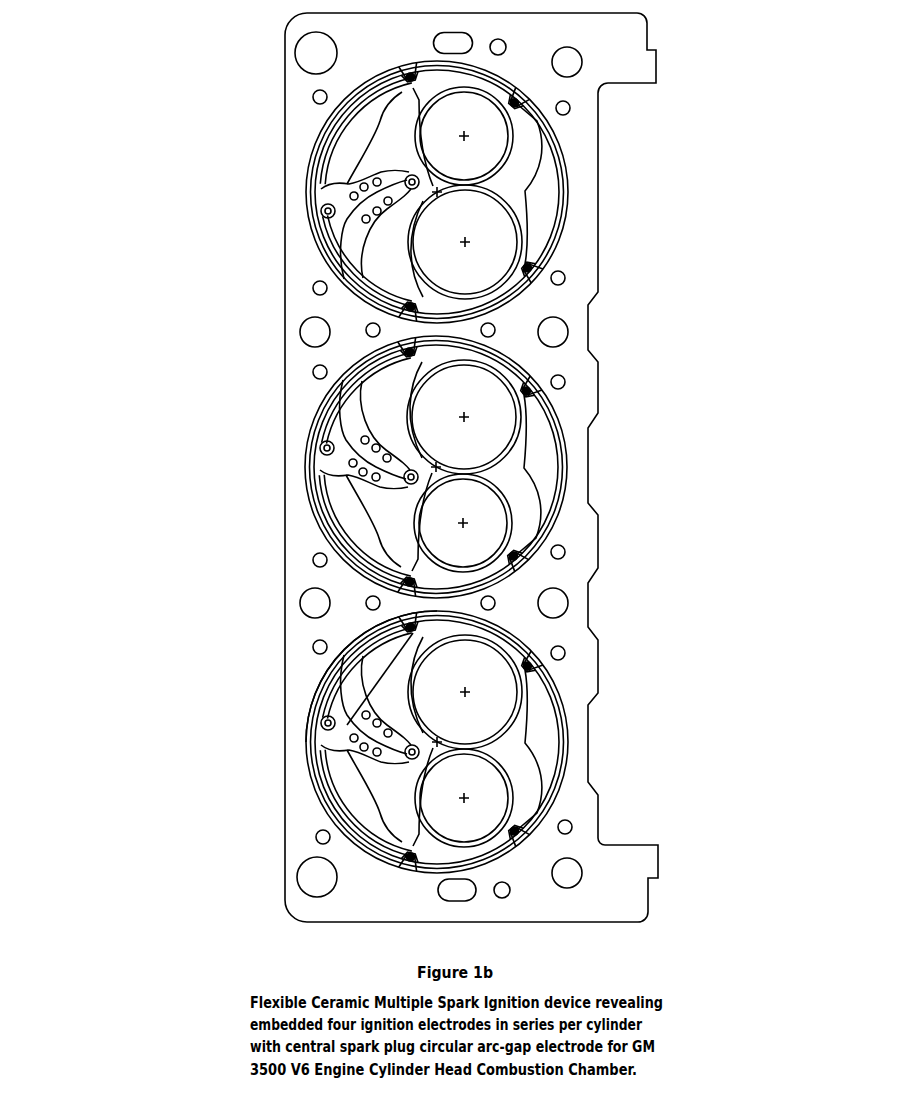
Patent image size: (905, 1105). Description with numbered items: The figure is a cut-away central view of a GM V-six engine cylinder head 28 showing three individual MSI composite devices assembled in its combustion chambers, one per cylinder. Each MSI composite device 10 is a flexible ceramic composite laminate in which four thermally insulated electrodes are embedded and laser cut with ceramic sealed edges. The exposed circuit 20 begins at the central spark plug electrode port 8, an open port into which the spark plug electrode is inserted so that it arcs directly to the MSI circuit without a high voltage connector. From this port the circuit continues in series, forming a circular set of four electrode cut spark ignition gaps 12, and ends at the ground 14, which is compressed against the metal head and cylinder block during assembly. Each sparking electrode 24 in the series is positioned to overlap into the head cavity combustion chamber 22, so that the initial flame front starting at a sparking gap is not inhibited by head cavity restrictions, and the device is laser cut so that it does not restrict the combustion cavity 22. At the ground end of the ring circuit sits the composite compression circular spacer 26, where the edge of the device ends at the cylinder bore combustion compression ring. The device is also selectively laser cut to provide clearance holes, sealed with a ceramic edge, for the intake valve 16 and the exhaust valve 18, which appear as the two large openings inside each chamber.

The central spark plug electrode port 8 is at (400, 176).
The MSI composite device 10 is at (295, 227).
The electrode cut spark ignition gaps 12 is at (432, 290).
The ground 14 is at (309, 447).
The intake valve 16 is at (513, 424).
The exhaust valve 18 is at (503, 521).
The exposed circuit 20 is at (379, 556).
The combustion cavity 22 is at (536, 736).
The sparking electrode 24 is at (396, 837).
The composite compression circular spacer 26 is at (295, 715).
The GM 3500 V6 engine cylinder head 28 is at (280, 866).